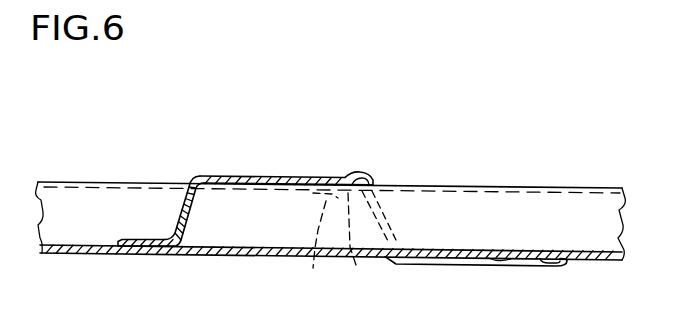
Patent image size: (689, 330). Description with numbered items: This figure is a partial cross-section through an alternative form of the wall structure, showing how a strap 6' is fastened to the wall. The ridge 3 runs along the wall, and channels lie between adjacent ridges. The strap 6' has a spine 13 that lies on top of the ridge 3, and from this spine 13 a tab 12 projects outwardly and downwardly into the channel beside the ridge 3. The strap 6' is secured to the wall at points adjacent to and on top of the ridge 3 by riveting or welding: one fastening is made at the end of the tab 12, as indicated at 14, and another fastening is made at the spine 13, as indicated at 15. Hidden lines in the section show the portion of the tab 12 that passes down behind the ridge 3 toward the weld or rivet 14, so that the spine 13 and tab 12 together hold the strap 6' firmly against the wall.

The ridge 3 is at (556, 205).
The tab 12 is at (166, 244).
The spine 13 is at (300, 178).
The riveting or welding at tab ends 14 is at (142, 253).
The riveting or welding at spine 15 is at (243, 178).
The strap 6' is at (413, 215).